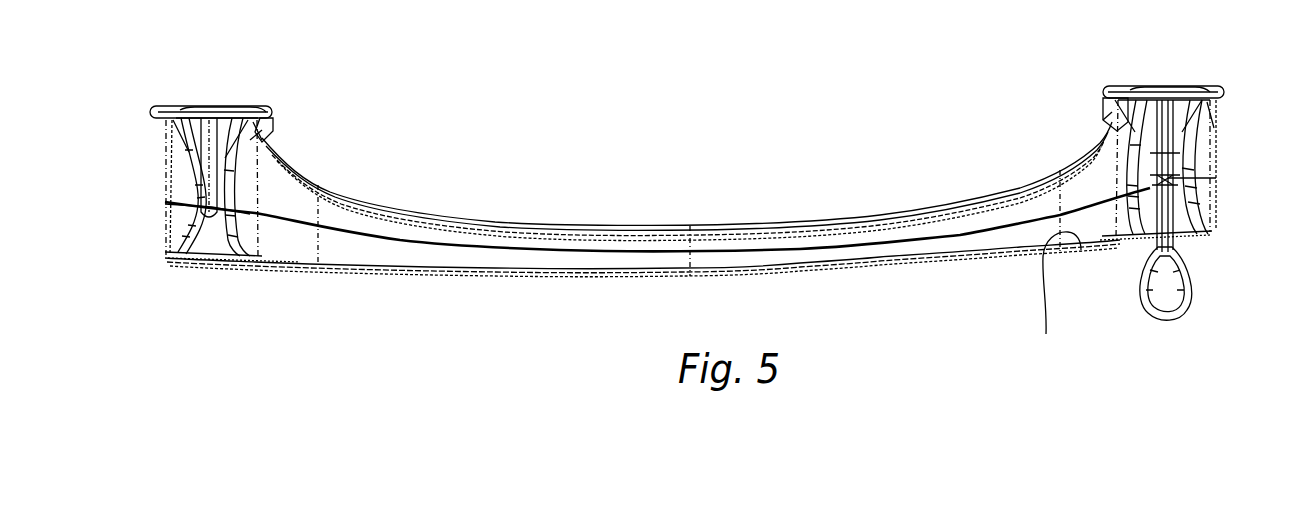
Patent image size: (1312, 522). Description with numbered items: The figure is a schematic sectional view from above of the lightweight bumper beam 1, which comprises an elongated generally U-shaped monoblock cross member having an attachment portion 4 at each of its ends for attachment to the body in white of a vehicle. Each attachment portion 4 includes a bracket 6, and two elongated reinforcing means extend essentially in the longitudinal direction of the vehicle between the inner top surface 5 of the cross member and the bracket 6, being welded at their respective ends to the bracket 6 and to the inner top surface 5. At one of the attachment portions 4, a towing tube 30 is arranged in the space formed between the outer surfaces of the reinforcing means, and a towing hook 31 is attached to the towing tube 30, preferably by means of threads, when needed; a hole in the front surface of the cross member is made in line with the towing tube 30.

The lightweight bumper beam 1 is at (878, 318).
The attachment portion 4 is at (145, 211).
The inner top surface 5 is at (1056, 305).
The bracket 6 is at (251, 106).
The towing tube 30 is at (1165, 138).
The towing hook 31 is at (1185, 305).